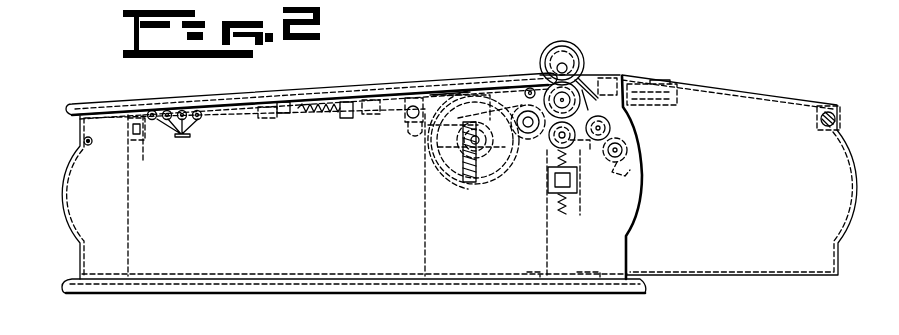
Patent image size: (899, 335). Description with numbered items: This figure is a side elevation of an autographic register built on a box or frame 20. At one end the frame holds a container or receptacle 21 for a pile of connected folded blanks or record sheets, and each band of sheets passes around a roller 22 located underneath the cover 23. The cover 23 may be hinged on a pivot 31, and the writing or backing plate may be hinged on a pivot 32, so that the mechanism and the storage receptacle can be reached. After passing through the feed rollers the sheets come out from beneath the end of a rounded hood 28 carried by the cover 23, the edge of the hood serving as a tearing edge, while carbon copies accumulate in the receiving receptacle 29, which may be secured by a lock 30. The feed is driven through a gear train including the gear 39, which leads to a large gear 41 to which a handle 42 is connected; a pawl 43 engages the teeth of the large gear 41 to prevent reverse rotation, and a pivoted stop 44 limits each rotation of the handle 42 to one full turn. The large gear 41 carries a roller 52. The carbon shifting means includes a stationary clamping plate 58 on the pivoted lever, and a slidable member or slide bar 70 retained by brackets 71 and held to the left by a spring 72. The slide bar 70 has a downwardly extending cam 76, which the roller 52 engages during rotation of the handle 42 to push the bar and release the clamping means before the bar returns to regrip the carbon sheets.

The box or frame 20 is at (470, 273).
The container or receptacle 21 is at (128, 262).
The roller 22 is at (175, 135).
The cover 23 is at (219, 96).
The rounded hood 28 is at (579, 52).
The receiving receptacle 29 is at (850, 183).
The lock 30 is at (660, 80).
The pivot 31 is at (84, 141).
The pivot 32 is at (143, 161).
The gear 39 is at (513, 93).
The large gear 41 is at (492, 186).
The handle 42 is at (612, 127).
The pawl 43 is at (412, 140).
The pivoted stop 44 is at (628, 172).
The roller 52 is at (453, 163).
The stationary clamping plate 58 is at (447, 90).
The slidable member or slide bar 70 is at (370, 120).
The brackets 71 is at (280, 120).
The spring 72 is at (318, 120).
The cam 76 is at (447, 150).